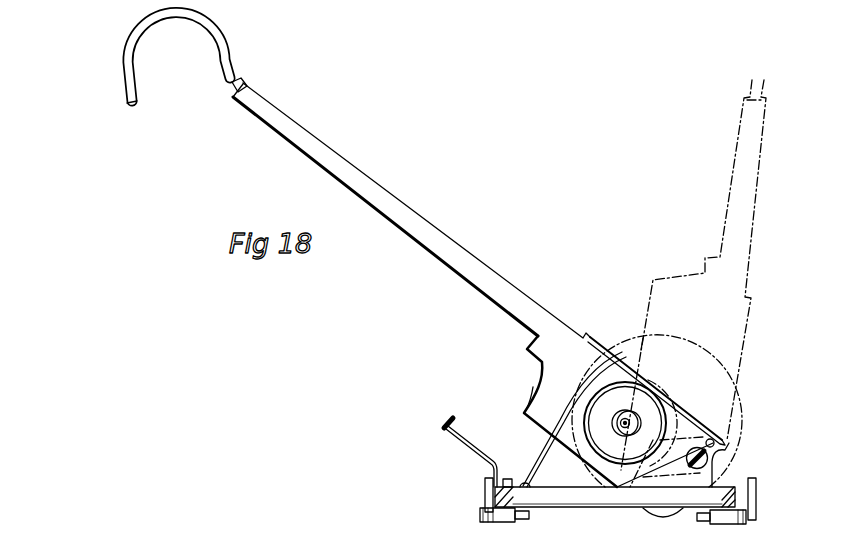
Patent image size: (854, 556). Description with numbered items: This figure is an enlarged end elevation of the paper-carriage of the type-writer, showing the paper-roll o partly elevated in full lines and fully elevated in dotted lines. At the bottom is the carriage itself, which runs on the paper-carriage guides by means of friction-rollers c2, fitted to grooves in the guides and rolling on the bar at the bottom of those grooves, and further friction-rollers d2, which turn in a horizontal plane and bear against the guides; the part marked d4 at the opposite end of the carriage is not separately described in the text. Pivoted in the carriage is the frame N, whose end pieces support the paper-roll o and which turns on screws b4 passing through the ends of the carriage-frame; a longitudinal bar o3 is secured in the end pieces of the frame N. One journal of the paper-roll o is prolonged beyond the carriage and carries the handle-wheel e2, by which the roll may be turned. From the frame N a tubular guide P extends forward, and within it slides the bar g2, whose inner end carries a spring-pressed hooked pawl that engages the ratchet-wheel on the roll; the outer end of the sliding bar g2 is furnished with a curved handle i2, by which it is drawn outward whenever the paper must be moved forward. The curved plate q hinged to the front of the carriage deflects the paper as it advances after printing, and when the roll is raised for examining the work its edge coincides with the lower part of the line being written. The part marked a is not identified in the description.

The curved handle i2 is at (134, 76).
The sliding bar g2 is at (235, 95).
The tubular guide P is at (433, 225).
The frame N is at (530, 389).
The curved plate q is at (540, 447).
The paper-roll o is at (583, 445).
The axis line a is at (634, 343).
The handle-wheel e2 is at (641, 398).
The friction-rollers c2 is at (485, 492).
The friction-rollers d2 is at (485, 513).
The nut d4 is at (756, 520).
The screws b4 is at (709, 458).
The longitudinal bar o3 is at (716, 442).